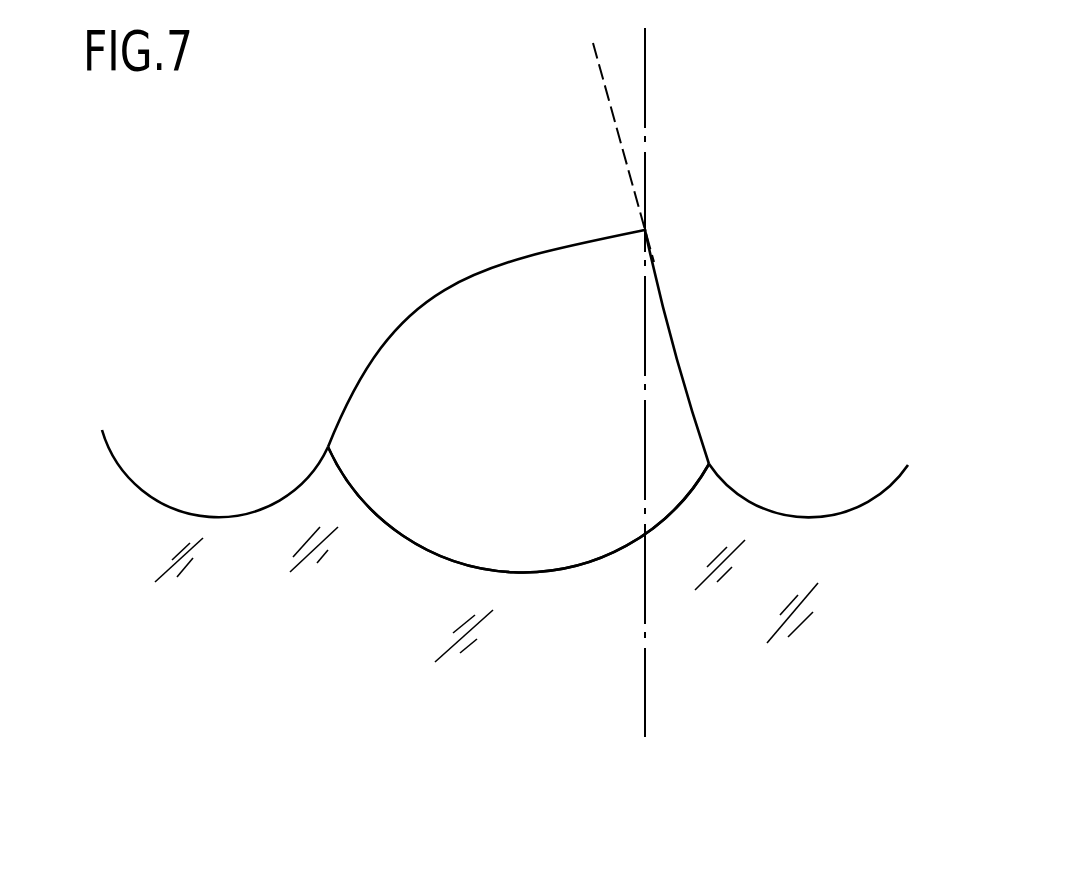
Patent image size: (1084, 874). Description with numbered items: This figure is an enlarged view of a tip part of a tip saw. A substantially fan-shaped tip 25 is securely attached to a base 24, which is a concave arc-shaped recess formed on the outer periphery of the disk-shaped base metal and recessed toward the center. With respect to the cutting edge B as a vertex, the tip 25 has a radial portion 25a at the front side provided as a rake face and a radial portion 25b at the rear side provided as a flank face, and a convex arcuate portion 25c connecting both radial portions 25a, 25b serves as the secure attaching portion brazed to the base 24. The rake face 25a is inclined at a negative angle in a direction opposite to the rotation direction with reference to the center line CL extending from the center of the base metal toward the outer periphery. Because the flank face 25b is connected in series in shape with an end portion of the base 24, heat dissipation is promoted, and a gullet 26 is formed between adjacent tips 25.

The base 24 is at (580, 572).
The tip 25 is at (554, 409).
The radial portion at a front side (rake face) 25a is at (668, 308).
The radial portion at a rear side (flank face) 25b is at (555, 245).
The convex arcuate portion 25c is at (438, 548).
The gullet 26 is at (205, 517).
The cutting edge B is at (645, 230).
The center line CL is at (645, 414).